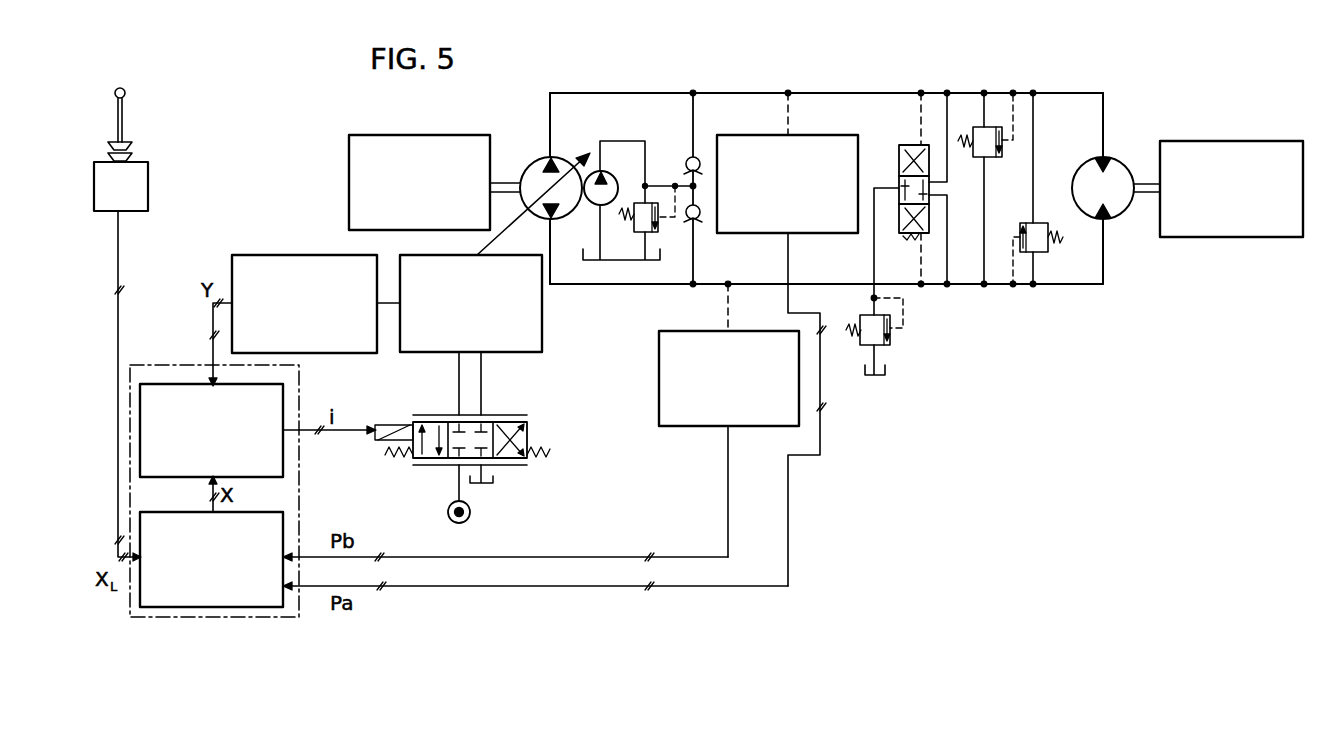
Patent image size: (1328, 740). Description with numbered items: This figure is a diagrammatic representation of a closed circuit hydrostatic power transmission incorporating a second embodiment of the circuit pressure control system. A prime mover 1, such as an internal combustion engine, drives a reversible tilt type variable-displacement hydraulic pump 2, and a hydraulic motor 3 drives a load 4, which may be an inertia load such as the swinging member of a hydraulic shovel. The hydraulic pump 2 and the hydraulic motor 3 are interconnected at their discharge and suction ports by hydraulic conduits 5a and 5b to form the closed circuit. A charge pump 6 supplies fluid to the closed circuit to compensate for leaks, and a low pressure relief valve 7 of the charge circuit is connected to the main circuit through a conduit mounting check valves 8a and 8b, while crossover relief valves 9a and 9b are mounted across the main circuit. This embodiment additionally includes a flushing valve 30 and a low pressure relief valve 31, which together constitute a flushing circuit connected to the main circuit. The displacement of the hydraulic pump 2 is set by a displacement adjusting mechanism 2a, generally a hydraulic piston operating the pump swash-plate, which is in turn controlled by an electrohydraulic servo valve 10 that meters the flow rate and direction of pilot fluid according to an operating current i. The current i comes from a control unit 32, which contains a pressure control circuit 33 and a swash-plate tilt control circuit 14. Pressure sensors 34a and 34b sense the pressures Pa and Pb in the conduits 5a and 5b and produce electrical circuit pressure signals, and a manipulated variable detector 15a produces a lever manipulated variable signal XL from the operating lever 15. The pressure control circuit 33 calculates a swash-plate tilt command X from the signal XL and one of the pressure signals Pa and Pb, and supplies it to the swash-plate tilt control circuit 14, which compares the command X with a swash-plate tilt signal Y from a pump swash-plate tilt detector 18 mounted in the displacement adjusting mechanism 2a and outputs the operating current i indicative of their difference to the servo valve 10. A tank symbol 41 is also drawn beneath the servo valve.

The prime mover 1 is at (349, 158).
The variable-displacement hydraulic pump 2 is at (534, 176).
The displacement adjusting mechanism 2a is at (542, 318).
The hydraulic motor 3 is at (1129, 162).
The load 4 is at (1229, 141).
The hydraulic conduit 5a is at (830, 93).
The hydraulic conduit 5b is at (948, 284).
The charge pump 6 is at (612, 176).
The low pressure relief valve 7 is at (660, 233).
The check valve 8a is at (688, 166).
The check valve 8b is at (698, 222).
The crossover relief valve 9a is at (1002, 158).
The crossover relief valve 9b is at (1048, 252).
The servo valve 10 is at (527, 432).
The swash-plate tilt control circuit 14 is at (178, 384).
The operating lever 15 is at (124, 108).
The manipulated variable detector 15a is at (148, 178).
The pump swash-plate tilt detector 18 is at (260, 255).
The flushing valve 30 is at (899, 150).
The low pressure relief valve 31 is at (890, 340).
The control unit 32 is at (299, 483).
The pressure control circuit 33 is at (258, 608).
The pressure sensor 34a is at (720, 134).
The pressure sensor 34b is at (659, 404).
The tank 41 is at (470, 512).